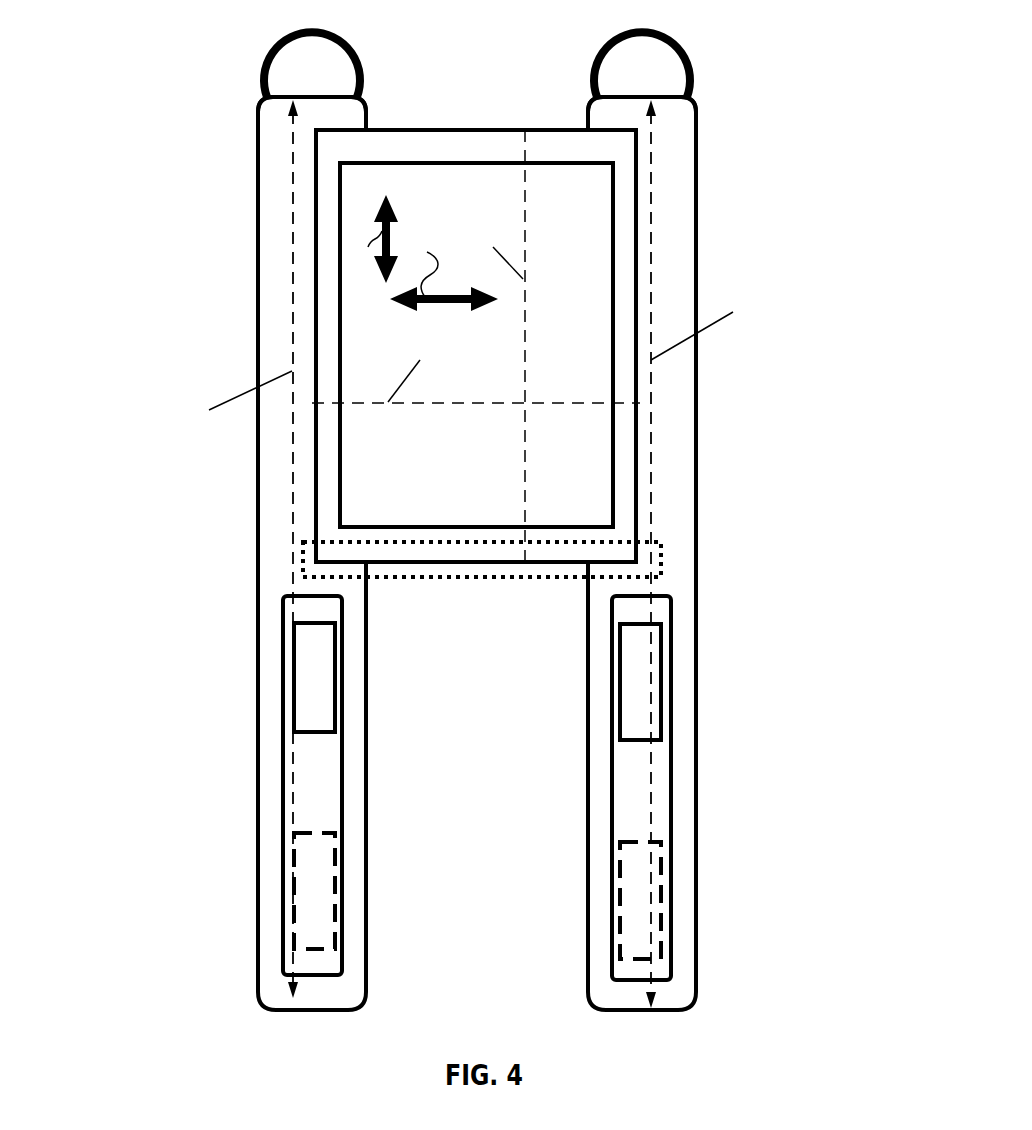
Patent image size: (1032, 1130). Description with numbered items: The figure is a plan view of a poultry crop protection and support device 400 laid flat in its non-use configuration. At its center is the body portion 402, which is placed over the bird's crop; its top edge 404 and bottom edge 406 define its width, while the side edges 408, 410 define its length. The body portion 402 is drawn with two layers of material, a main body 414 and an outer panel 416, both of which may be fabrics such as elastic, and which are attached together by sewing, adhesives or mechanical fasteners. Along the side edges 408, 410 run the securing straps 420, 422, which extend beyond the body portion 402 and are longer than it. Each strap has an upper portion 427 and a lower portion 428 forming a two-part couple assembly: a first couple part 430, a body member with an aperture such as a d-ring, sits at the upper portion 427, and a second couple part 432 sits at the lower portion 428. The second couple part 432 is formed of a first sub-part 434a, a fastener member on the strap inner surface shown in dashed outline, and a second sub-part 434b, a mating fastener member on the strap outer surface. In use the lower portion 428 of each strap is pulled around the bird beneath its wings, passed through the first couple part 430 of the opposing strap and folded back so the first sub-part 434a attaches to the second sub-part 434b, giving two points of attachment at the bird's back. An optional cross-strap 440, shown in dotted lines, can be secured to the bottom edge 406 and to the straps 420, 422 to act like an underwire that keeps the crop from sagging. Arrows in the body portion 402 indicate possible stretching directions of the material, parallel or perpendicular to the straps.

The protection and support device 400 is at (182, 238).
The body portion 402 is at (636, 248).
The top edge 404 is at (410, 128).
The bottom edge 406 is at (487, 570).
The side edge 408 is at (298, 453).
The side edge 410 is at (636, 455).
The main body 414 is at (618, 310).
The outer panel 416 is at (402, 487).
The securing strap 420 is at (281, 239).
The securing strap 422 is at (683, 506).
The upper portion 427 is at (263, 102).
The lower portion 428 is at (273, 813).
The first couple part 430 is at (283, 43).
The second couple part 432 is at (337, 757).
The first sub-part 434a is at (303, 903).
The second sub-part 434b is at (303, 680).
The cross-strap 440 is at (700, 570).